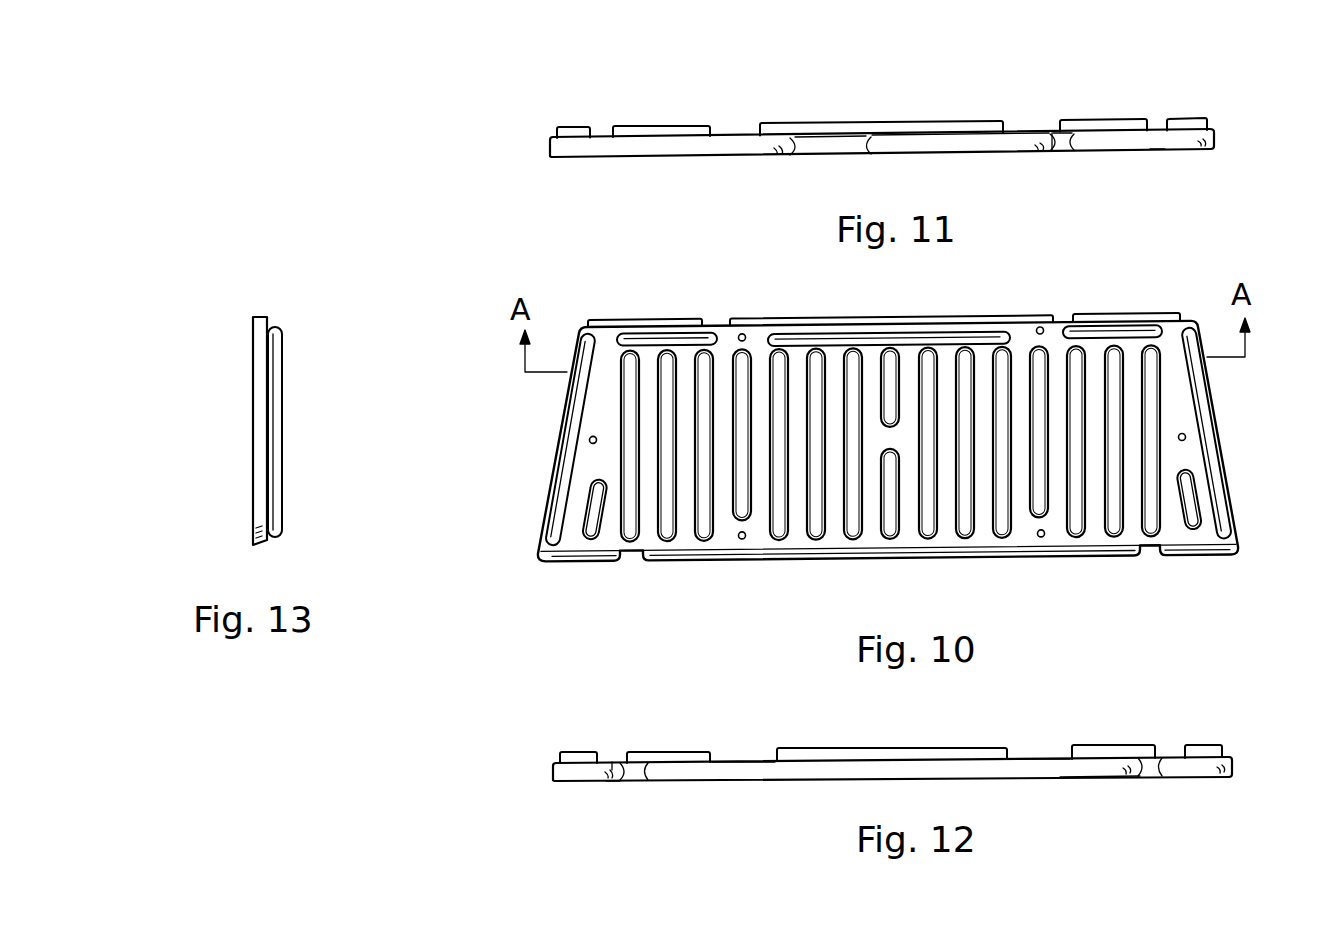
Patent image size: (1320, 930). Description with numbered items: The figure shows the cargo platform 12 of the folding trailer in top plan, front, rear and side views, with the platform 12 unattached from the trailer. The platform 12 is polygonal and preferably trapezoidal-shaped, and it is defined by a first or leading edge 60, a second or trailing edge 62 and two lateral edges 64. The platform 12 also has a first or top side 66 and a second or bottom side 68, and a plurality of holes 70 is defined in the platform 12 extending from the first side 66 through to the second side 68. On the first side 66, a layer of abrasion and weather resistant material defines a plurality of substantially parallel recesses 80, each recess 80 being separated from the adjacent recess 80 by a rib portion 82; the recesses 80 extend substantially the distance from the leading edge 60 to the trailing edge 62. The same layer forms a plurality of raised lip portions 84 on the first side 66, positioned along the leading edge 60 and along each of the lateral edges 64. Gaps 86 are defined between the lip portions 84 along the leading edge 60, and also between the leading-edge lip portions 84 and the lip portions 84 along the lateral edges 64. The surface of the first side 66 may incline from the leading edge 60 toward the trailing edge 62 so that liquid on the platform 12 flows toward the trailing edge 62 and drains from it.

In FIG. 11, the platform 12 is at (598, 96).
In FIG. 10, the platform 12 is at (630, 302).
In FIG. 12, the platform 12 is at (676, 709).
In FIG. 13, the platform 12 is at (240, 290).
In FIG. 11, the leading edge 60 is at (935, 139).
In FIG. 10, the leading edge 60 is at (942, 326).
In FIG. 10, the trailing edge 62 is at (762, 562).
In FIG. 12, the trailing edge 62 is at (1065, 770).
In FIG. 11, the lateral edges 64 is at (550, 144).
In FIG. 10, the lateral edges 64 is at (552, 492).
In FIG. 12, the lateral edges 64 is at (553, 766).
In FIG. 13, the lateral edges 64 is at (258, 455).
In FIG. 11, the first side 66 is at (1157, 118).
In FIG. 10, the first side 66 is at (946, 449).
In FIG. 12, the first side 66 is at (612, 748).
In FIG. 11, the second side 68 is at (1157, 160).
In FIG. 12, the second side 68 is at (612, 794).
In FIG. 10, the holes 70 is at (590, 441).
In FIG. 10, the recesses 80 is at (1180, 540).
In FIG. 10, the rib portion 82 is at (1025, 538).
In FIG. 11, the raised lip portions 84 is at (576, 127).
In FIG. 10, the raised lip portions 84 is at (1094, 330).
In FIG. 12, the raised lip portions 84 is at (1139, 757).
In FIG. 13, the raised lip portions 84 is at (273, 330).
In FIG. 11, the gaps 86 is at (745, 122).
In FIG. 12, the gaps 86 is at (737, 746).